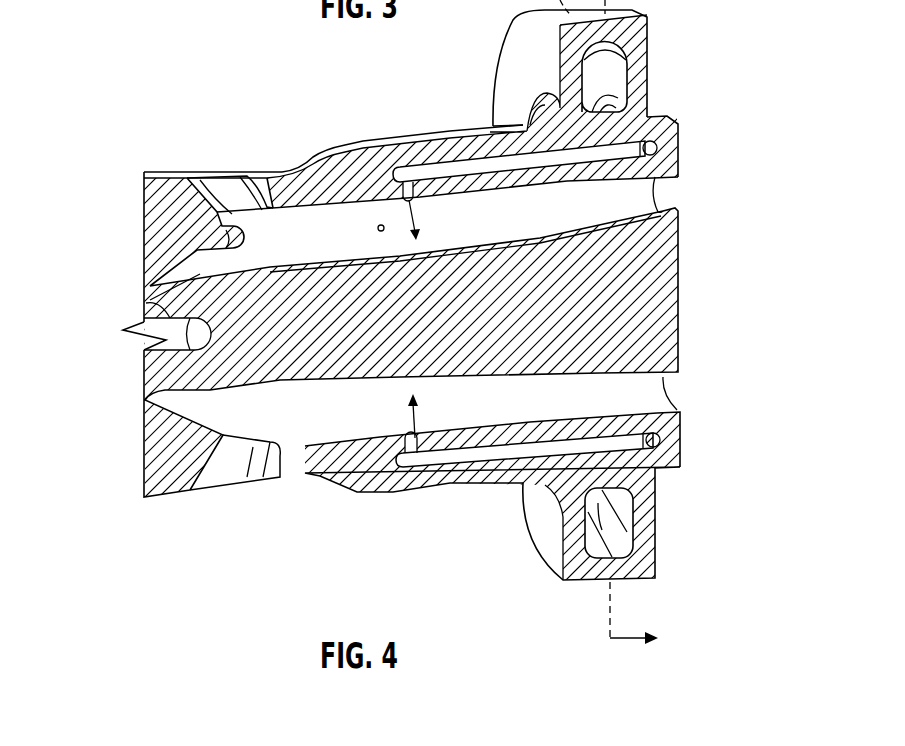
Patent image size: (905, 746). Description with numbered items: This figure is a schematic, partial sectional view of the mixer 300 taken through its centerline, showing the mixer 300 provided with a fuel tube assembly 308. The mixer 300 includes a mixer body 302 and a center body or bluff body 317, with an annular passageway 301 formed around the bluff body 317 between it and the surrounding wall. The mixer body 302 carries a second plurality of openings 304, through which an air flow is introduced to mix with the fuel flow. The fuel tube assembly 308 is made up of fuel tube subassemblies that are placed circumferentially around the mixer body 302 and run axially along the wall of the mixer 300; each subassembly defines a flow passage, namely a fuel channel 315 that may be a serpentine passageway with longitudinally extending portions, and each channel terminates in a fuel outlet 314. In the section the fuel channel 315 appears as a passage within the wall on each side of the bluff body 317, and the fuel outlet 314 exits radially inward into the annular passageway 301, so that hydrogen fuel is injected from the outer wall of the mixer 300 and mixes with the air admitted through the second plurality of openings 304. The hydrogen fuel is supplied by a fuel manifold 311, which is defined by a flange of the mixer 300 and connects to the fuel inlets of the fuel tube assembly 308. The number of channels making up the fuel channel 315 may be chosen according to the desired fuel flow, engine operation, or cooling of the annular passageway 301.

The mixer 300 is at (110, 98).
The annular passageway 301 is at (640, 202).
The mixer body 302 is at (375, 140).
The second plurality of openings 304 is at (220, 187).
The fuel tube assembly 308 is at (652, 136).
The fuel manifold 311 is at (630, 72).
The fuel outlet 314 is at (413, 202).
The fuel channel 315 is at (655, 152).
The bluff body 317 is at (655, 293).